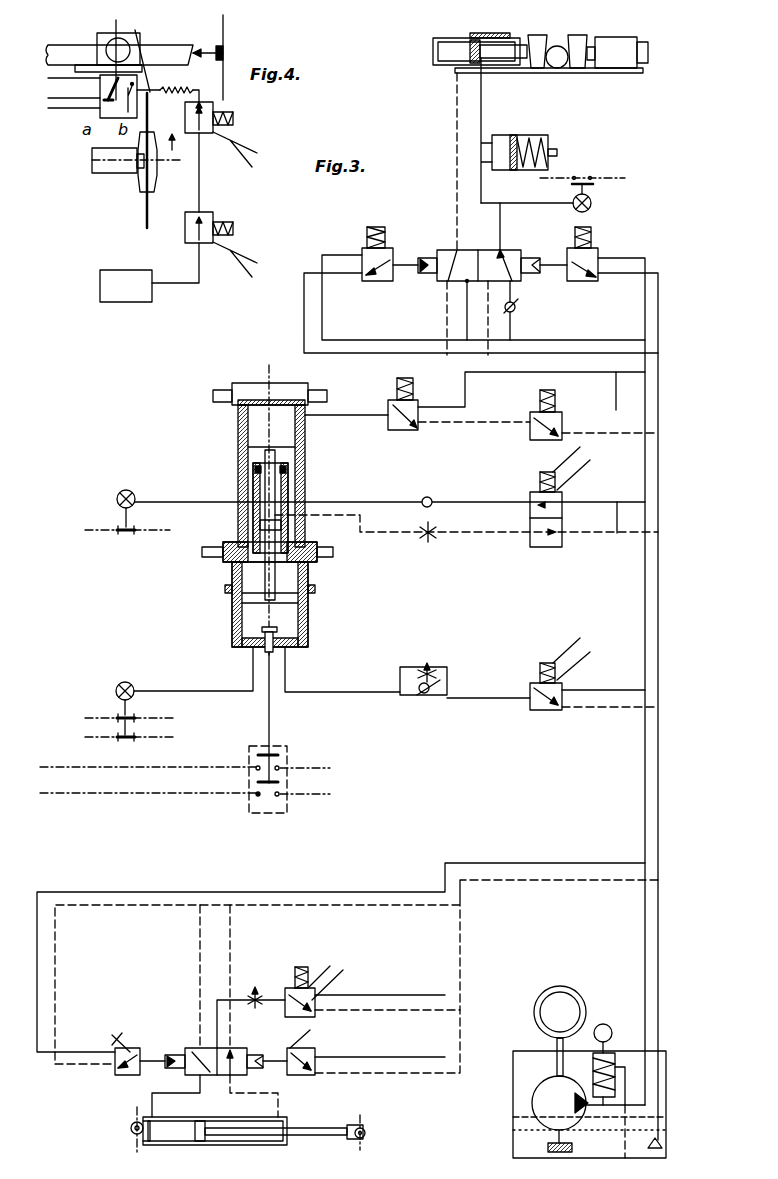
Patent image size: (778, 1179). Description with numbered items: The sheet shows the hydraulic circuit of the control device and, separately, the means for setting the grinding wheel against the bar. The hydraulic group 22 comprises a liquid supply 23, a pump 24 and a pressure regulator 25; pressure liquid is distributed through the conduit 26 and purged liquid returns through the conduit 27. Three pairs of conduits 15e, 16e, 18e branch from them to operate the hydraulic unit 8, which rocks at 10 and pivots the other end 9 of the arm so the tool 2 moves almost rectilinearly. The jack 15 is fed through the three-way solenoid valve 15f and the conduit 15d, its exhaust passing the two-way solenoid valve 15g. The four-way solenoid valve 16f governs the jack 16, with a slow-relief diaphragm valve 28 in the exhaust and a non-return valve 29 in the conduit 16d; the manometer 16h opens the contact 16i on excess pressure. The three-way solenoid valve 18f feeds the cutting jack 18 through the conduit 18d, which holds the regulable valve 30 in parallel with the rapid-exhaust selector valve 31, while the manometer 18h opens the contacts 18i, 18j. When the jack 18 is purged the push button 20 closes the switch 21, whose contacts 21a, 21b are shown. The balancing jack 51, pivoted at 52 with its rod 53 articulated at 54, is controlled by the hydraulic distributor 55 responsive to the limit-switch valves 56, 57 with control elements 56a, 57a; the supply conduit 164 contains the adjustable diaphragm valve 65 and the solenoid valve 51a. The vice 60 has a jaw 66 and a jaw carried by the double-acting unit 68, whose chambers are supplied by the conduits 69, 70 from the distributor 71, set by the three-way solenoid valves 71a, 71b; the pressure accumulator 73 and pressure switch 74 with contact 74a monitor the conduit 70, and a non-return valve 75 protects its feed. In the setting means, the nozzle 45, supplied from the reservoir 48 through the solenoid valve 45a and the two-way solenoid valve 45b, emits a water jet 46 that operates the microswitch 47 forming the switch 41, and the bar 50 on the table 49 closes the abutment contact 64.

In FIG. 4, the tool 2 is at (148, 110).
In FIG. 3, the hydraulic unit 8 is at (262, 383).
In FIG. 3, the other end of arm 9 is at (325, 557).
In FIG. 3, the rocking mount 10 is at (222, 392).
In FIG. 3, the jack 15 is at (255, 436).
In FIG. 3, the conduit 15d is at (333, 416).
In FIG. 3, the pair of conduits 15e is at (616, 410).
In FIG. 3, the three-way solenoid valve 15f is at (392, 372).
In FIG. 3, the two-way solenoid valve 15g is at (570, 398).
In FIG. 3, the jack 16 is at (258, 490).
In FIG. 3, the conduit 16d is at (343, 501).
In FIG. 3, the pair of conduits 16e is at (617, 533).
In FIG. 3, the four-way solenoid valve 16f is at (565, 497).
In FIG. 3, the manometer 16h is at (132, 492).
In FIG. 3, the contact 16i is at (136, 530).
In FIG. 3, the jack 18 is at (255, 613).
In FIG. 3, the conduit 18d is at (330, 692).
In FIG. 3, the pair of conduits 18e is at (600, 700).
In FIG. 3, the three-way solenoid valve 18f is at (533, 683).
In FIG. 3, the manometer 18h is at (131, 684).
In FIG. 3, the contact 18i is at (136, 718).
In FIG. 3, the contact 18j is at (100, 738).
In FIG. 3, the push button 20 is at (275, 645).
In FIG. 3, the switch 21 is at (287, 813).
In FIG. 3, the contact 21a is at (275, 752).
In FIG. 3, the contact 21b is at (280, 779).
In FIG. 3, the hydraulic group 22 is at (530, 1034).
In FIG. 3, the liquid supply 23 is at (527, 1125).
In FIG. 3, the pump 24 is at (545, 1082).
In FIG. 3, the pressure regulator 25 is at (606, 1025).
In FIG. 3, the conduit 26 is at (645, 975).
In FIG. 3, the conduit 27 is at (658, 925).
In FIG. 3, the slow-relief diaphragm valve 28 is at (432, 538).
In FIG. 3, the non-return valve 29 is at (431, 498).
In FIG. 3, the valve 30 is at (436, 662).
In FIG. 3, the selector valve of rapid exhaust circuit 31 is at (446, 683).
In FIG. 4, the switch 41 is at (100, 90).
In FIG. 4, the nozzle 45 is at (172, 88).
In FIG. 4, the solenoid valve 45a is at (233, 228).
In FIG. 4, the two-way solenoid valve 45b is at (233, 118).
In FIG. 4, the jet of water 46 is at (122, 55).
In FIG. 4, the microswitch 47 is at (100, 103).
In FIG. 4, the reservoir 48 is at (115, 270).
In FIG. 4, the table 49 is at (80, 65).
In FIG. 3, the table 49 is at (613, 63).
In FIG. 4, the bar 50 is at (158, 55).
In FIG. 3, the bar 50 is at (557, 46).
In FIG. 3, the double effect piston cylinder unit 51 is at (225, 1118).
In FIG. 3, the solenoid valve 51a is at (372, 975).
In FIG. 3, the pivot 52 is at (131, 1125).
In FIG. 3, the rod 53 is at (312, 1128).
In FIG. 3, the articulation 54 is at (365, 1128).
In FIG. 3, the hydraulic distributor 55 is at (190, 1048).
In FIG. 3, the valve 56 is at (115, 1050).
In FIG. 3, the mechanical control element 56a is at (129, 1033).
In FIG. 3, the valve 57 is at (312, 1048).
In FIG. 3, the mechanical control element 57a is at (290, 1034).
In FIG. 4, the vice 60 is at (110, 33).
In FIG. 3, the vice 60 is at (633, 35).
In FIG. 4, the contact 64 is at (225, 52).
In FIG. 3, the diaphragm valve 65 is at (252, 992).
In FIG. 3, the jaw 66 is at (585, 36).
In FIG. 3, the double-acting piston cylinder unit 68 is at (458, 40).
In FIG. 3, the conduit 69 is at (457, 118).
In FIG. 3, the conduit 70 is at (481, 108).
In FIG. 3, the hydraulic distributor 71 is at (450, 250).
In FIG. 3, the three-way solenoid valve 71a is at (585, 245).
In FIG. 3, the three-way solenoid valve 71b is at (365, 248).
In FIG. 3, the pressure accumulator 73 is at (538, 134).
In FIG. 3, the pressure responsive switch 74 is at (574, 208).
In FIG. 3, the normally-open contact 74a is at (586, 177).
In FIG. 3, the non-return valve 75 is at (517, 312).
In FIG. 3, the conduit 164 is at (219, 998).